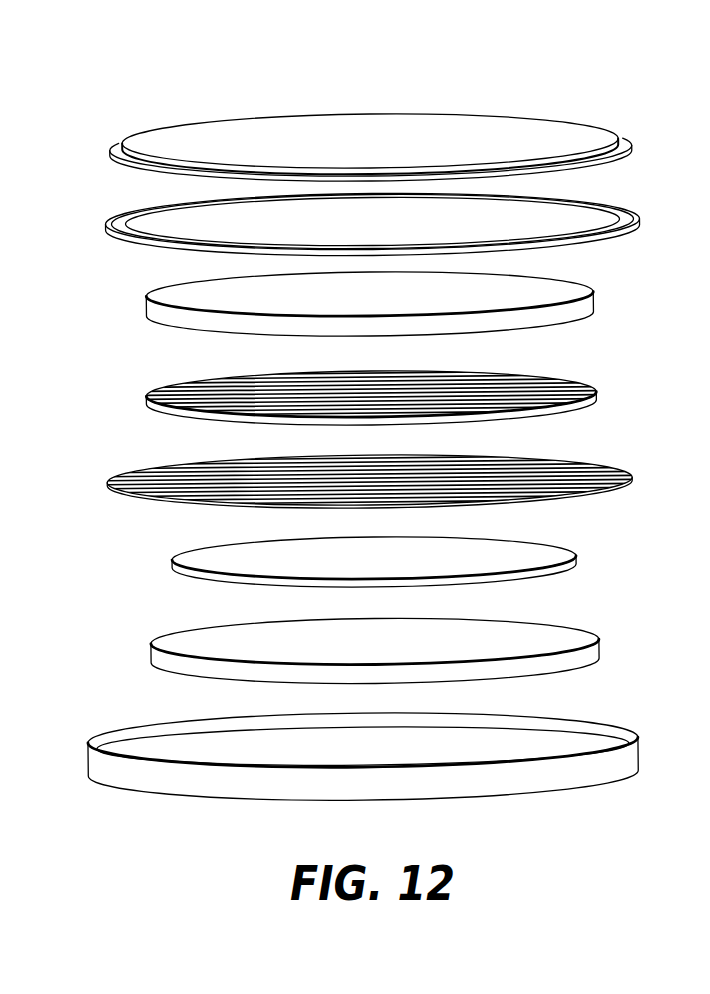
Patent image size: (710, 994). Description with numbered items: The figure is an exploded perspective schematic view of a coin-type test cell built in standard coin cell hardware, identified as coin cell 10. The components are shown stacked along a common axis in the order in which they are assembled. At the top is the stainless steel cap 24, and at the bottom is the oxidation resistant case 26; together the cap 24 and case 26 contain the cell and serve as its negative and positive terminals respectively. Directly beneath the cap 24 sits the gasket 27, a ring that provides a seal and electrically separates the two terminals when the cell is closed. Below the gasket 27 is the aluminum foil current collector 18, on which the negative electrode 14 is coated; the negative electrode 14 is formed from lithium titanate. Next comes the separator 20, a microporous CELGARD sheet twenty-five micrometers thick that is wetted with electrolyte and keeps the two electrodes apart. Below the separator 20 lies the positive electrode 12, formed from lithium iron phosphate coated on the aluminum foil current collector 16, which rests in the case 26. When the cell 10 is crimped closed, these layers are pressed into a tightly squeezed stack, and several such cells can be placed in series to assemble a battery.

The coin cell 10 is at (535, 90).
The positive electrode 12 is at (545, 557).
The negative electrode 14 is at (583, 388).
The aluminum foil current collector 16 is at (562, 640).
The aluminum foil current collector 18 is at (568, 297).
The separator 20 is at (597, 478).
The stainless steel cap 24 is at (613, 137).
The oxidation resistant case 26 is at (618, 762).
The gasket 27 is at (632, 221).